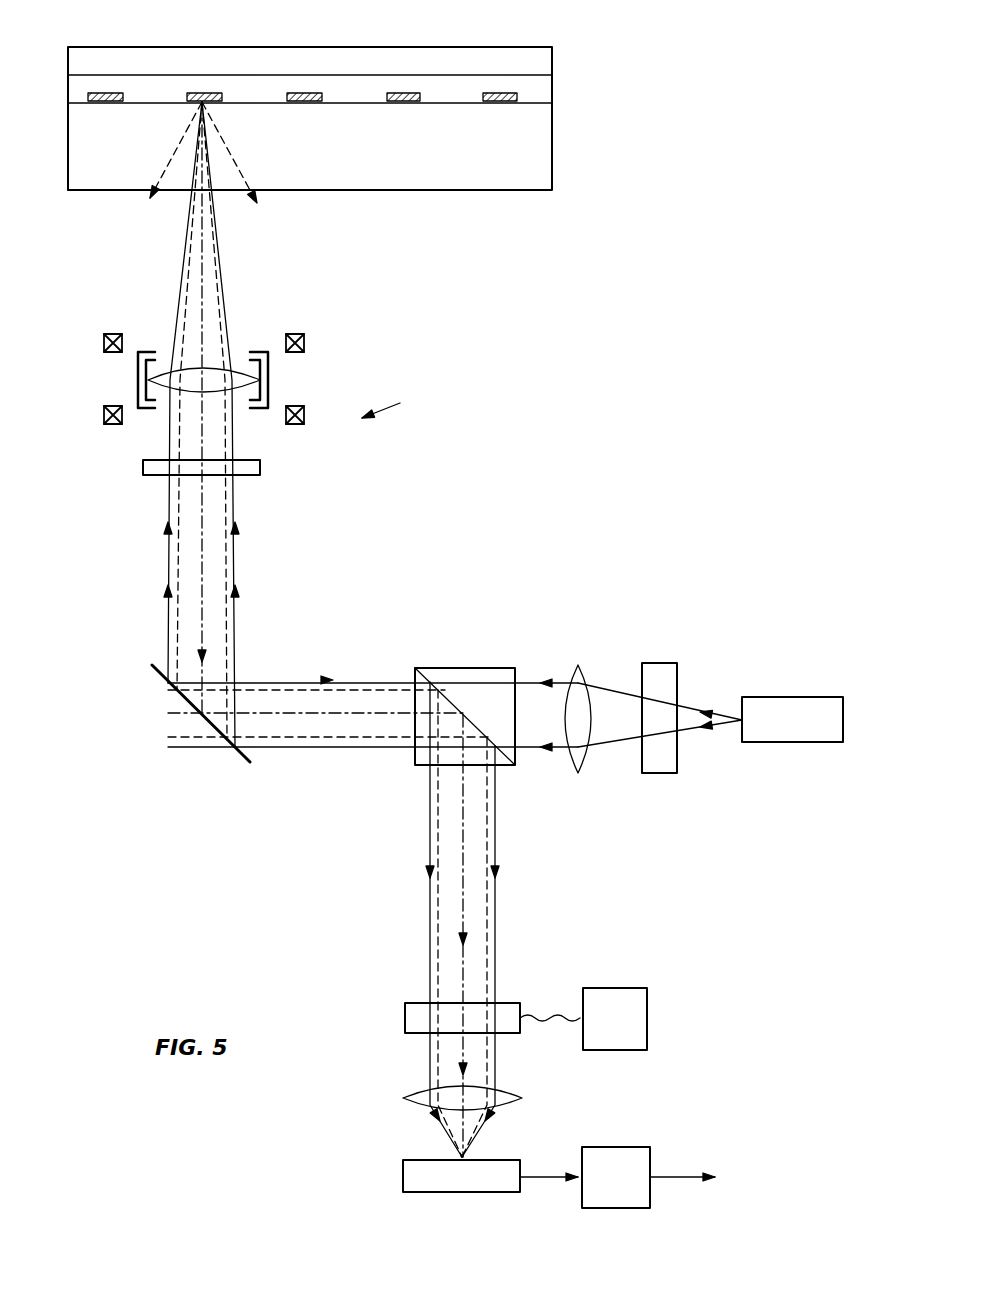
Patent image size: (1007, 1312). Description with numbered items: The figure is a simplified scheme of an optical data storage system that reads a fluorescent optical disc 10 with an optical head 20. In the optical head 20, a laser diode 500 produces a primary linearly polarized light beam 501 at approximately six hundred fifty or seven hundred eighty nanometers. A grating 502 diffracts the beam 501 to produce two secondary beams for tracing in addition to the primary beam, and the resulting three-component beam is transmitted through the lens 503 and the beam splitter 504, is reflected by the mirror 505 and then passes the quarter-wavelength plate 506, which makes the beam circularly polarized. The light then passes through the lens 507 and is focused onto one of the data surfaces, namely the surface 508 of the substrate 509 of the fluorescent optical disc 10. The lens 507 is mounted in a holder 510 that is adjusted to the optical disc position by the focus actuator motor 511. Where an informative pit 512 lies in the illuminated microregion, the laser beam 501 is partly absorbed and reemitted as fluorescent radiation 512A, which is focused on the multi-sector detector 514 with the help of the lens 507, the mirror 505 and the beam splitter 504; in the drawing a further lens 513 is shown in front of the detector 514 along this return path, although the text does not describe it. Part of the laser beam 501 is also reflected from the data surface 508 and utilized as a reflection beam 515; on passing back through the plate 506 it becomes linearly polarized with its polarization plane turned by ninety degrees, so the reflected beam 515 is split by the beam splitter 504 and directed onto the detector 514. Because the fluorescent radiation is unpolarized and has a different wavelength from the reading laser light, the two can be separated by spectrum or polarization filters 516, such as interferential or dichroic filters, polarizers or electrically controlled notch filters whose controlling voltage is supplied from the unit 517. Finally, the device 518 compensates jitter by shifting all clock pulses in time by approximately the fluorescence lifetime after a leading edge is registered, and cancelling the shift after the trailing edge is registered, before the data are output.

The fluorescent optical disc 10 is at (575, 42).
The optical head 20 is at (396, 405).
The laser diode 500 is at (795, 697).
The primary linearly polarized light beam 501 is at (183, 268).
The grating 502 is at (655, 663).
The lens 503 is at (578, 665).
The beam splitter 504 is at (493, 668).
The mirror 505 is at (233, 756).
The quarter-wavelength plate 506 is at (262, 468).
The lens 507 is at (238, 372).
The data surface 508 is at (80, 104).
The substrate 509 is at (540, 92).
The holder 510 is at (272, 380).
The focus actuator motor 511 is at (305, 345).
The informative pit 512 is at (203, 101).
The fluorescent radiation 512A is at (160, 182).
The focusing lens 513 is at (423, 1091).
The multi-sector detector 514 is at (403, 1181).
The reflection beam 515 is at (236, 605).
The spectrum or polarization filter 516 is at (512, 1003).
The control unit 517 is at (648, 996).
The clock pulse time shift device 518 is at (652, 1158).